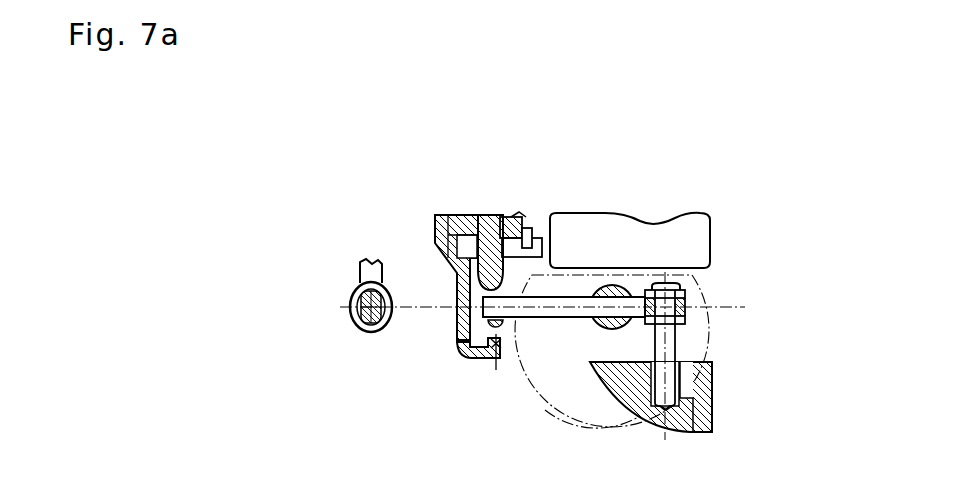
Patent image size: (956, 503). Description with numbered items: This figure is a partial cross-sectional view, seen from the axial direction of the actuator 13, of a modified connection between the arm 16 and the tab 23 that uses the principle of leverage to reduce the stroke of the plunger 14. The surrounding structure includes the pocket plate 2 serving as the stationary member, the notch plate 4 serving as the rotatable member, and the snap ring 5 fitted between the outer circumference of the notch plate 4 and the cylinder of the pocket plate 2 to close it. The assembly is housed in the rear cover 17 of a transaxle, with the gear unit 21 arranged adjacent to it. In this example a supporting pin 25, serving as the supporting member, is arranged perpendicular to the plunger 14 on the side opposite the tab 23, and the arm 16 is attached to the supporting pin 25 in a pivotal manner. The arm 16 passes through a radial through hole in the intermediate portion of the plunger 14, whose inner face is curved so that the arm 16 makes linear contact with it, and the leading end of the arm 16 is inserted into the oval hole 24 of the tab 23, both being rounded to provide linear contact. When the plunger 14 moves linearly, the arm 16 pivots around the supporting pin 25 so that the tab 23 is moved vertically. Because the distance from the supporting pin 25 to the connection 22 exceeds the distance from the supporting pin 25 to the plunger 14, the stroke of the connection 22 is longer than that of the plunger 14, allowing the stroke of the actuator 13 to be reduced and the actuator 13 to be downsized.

The pocket plate 2 is at (470, 232).
The notch plate 4 is at (508, 220).
The snap ring 5 is at (530, 240).
The actuator 13 is at (707, 330).
The plunger 14 is at (602, 332).
The arm 16 is at (553, 318).
The rear cover 17 is at (470, 358).
The gear unit 21 is at (711, 230).
The connection 22 is at (489, 348).
The tab 23 is at (360, 278).
The oval hole 24 is at (460, 347).
The supporting pin 25 is at (684, 347).